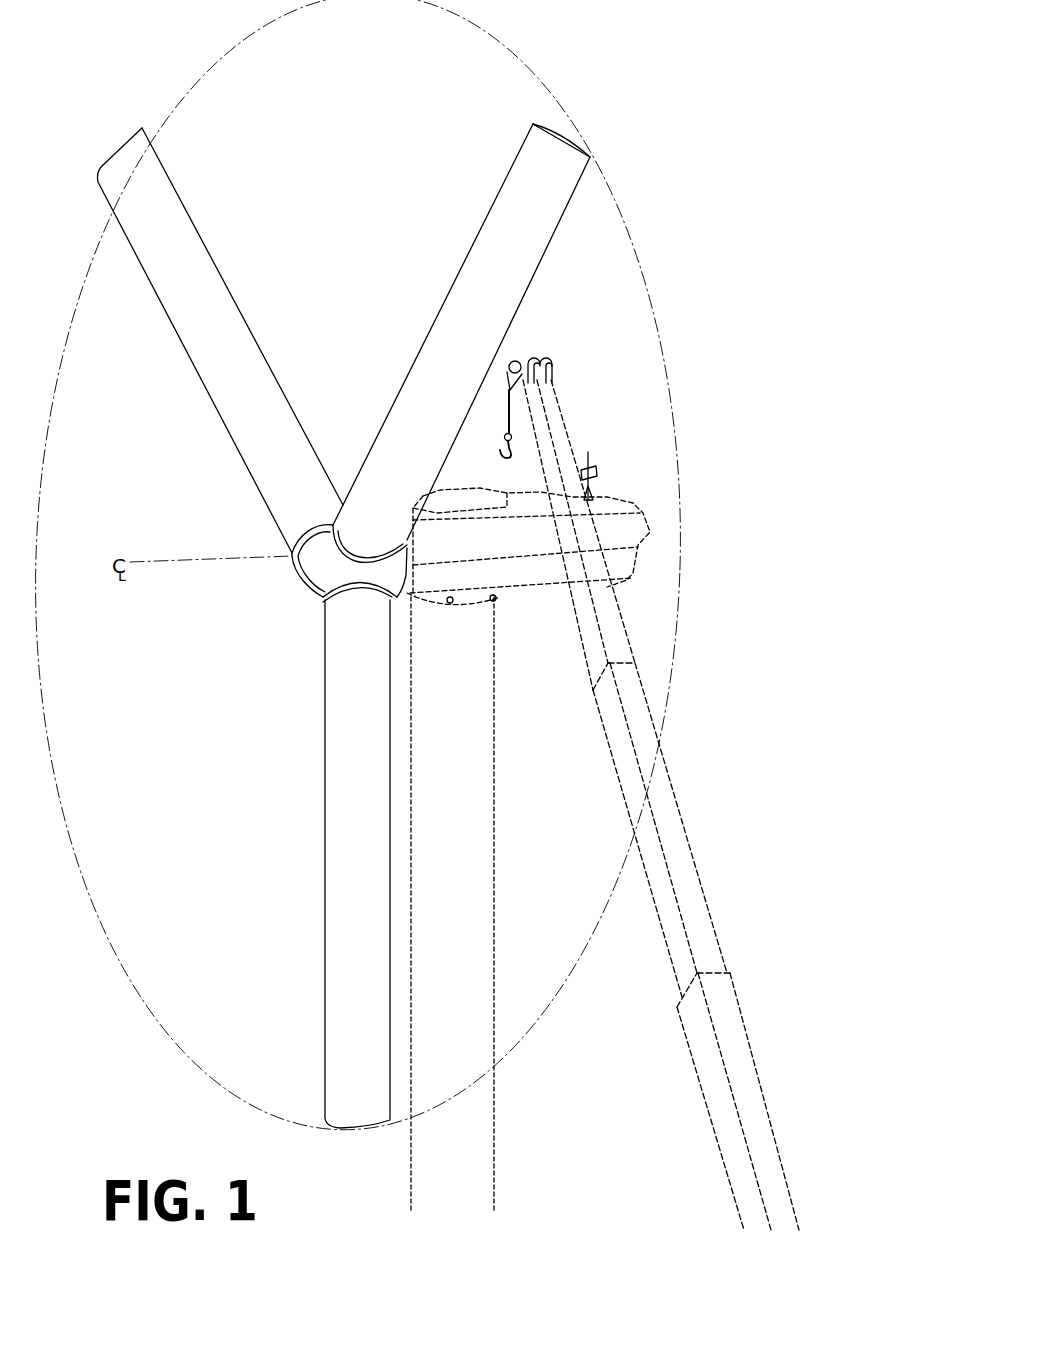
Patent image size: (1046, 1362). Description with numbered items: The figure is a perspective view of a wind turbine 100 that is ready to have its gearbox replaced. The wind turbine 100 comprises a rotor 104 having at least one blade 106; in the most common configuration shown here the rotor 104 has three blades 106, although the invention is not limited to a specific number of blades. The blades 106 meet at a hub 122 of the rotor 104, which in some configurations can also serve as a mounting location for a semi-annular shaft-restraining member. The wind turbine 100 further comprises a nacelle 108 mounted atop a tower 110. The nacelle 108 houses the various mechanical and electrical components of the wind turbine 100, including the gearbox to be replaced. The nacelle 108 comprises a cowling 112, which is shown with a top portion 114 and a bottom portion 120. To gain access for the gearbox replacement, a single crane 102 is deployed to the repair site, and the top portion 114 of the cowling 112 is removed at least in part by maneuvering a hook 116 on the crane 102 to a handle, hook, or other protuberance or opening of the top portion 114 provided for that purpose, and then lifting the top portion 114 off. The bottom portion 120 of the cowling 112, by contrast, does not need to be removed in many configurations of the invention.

The wind turbine 100 is at (116, 58).
The crane 102 is at (674, 804).
The rotor 104 is at (281, 591).
The blade 106 is at (240, 315).
The nacelle 108 is at (460, 466).
The tower 110 is at (417, 1157).
The cowling 112 is at (652, 518).
The top portion 114 is at (490, 550).
The hook 116 is at (505, 450).
The bottom portion 120 is at (490, 591).
The hub 122 is at (310, 595).